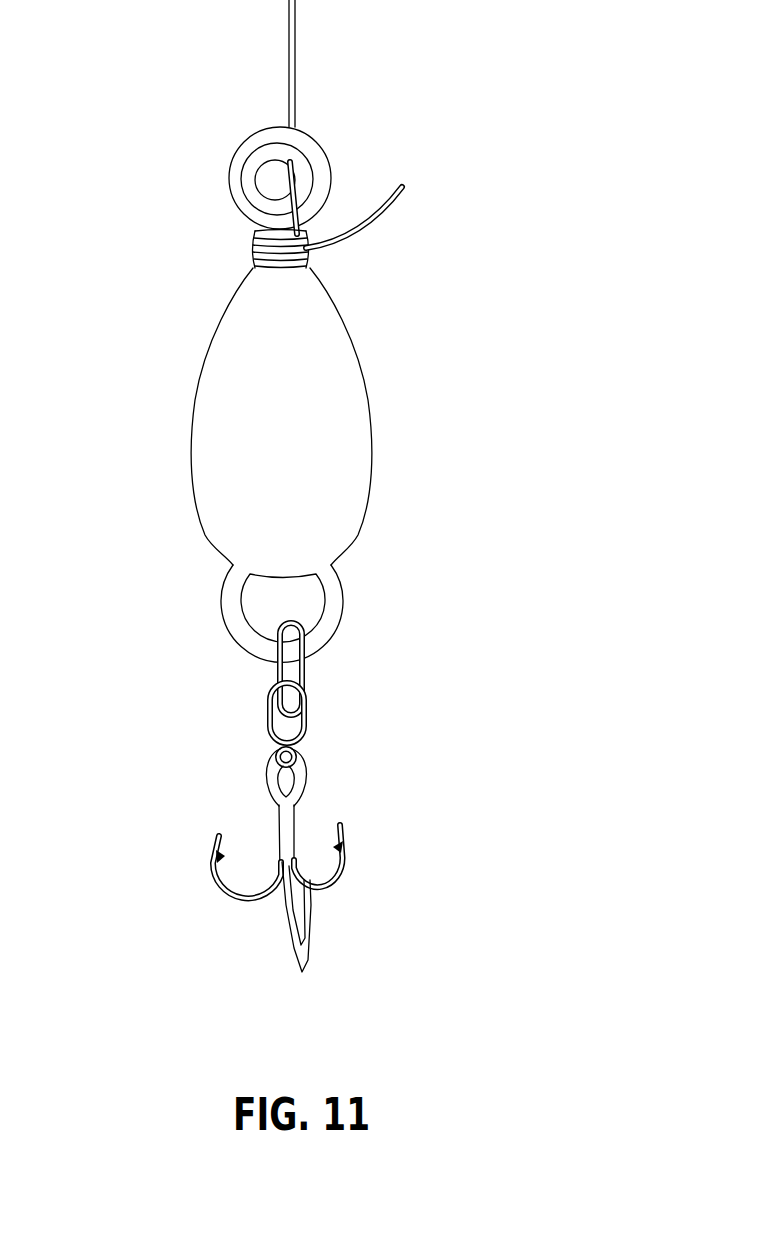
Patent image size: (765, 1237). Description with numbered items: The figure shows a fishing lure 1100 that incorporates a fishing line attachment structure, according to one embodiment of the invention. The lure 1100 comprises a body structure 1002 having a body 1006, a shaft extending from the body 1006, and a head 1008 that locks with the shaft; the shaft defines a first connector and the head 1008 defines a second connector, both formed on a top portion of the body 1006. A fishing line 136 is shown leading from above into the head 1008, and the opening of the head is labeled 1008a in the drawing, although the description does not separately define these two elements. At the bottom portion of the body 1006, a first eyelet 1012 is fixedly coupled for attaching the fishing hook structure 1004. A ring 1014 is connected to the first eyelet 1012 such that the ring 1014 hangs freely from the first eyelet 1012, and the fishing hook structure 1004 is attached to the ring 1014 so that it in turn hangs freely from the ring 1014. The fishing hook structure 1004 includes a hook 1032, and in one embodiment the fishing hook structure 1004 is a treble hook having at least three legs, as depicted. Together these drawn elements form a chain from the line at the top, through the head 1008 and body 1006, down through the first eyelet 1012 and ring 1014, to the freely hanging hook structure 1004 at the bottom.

The fishing line 136 is at (298, 45).
The head 1008 is at (232, 162).
The swivel ring eye 1008a is at (256, 198).
The fishing lure 1100 is at (313, 526).
The body structure 1002 is at (280, 465).
The body 1006 is at (369, 406).
The first eyelet 1012 is at (362, 601).
The ring 1014 is at (306, 692).
The fishing hook structure 1004 is at (226, 875).
The hook 1032 is at (304, 975).